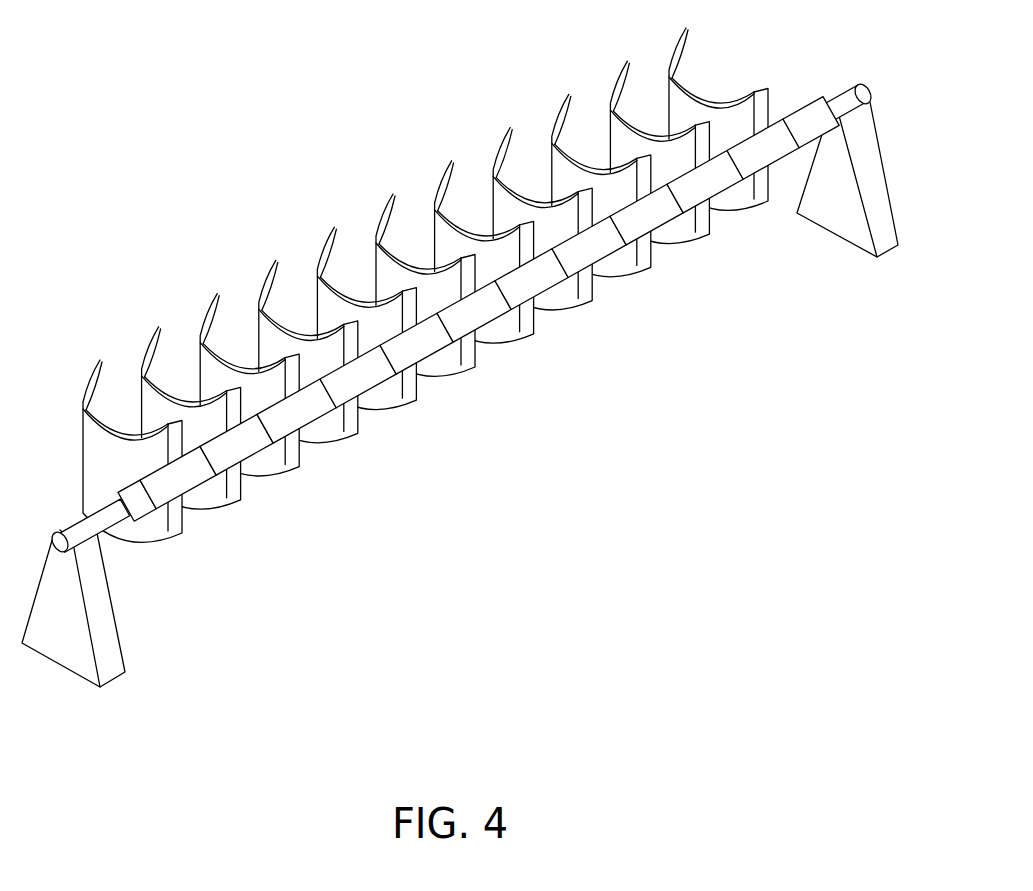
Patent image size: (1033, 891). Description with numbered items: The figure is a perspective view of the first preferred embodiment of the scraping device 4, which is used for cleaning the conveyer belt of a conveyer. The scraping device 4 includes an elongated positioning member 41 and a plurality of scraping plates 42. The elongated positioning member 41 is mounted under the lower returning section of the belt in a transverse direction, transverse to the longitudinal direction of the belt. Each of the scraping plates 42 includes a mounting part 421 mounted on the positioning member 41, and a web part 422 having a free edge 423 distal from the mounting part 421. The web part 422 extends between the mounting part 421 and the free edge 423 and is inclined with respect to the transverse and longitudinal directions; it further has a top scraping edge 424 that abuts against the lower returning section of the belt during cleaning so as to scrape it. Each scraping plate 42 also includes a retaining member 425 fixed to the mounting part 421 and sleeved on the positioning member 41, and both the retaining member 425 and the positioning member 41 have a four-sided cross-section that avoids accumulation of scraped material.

The scraping device 4 is at (205, 195).
The elongated positioning member 41 is at (833, 95).
The scraping plates 42 is at (563, 107).
The mounting part 421 is at (528, 317).
The web part 422 is at (440, 237).
The free edge 423 is at (450, 172).
The top scraping edge 424 is at (322, 252).
The retaining member 425 is at (248, 445).